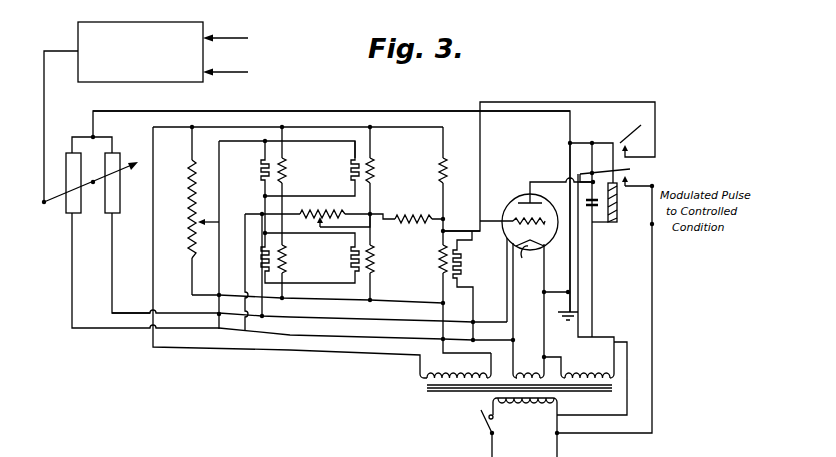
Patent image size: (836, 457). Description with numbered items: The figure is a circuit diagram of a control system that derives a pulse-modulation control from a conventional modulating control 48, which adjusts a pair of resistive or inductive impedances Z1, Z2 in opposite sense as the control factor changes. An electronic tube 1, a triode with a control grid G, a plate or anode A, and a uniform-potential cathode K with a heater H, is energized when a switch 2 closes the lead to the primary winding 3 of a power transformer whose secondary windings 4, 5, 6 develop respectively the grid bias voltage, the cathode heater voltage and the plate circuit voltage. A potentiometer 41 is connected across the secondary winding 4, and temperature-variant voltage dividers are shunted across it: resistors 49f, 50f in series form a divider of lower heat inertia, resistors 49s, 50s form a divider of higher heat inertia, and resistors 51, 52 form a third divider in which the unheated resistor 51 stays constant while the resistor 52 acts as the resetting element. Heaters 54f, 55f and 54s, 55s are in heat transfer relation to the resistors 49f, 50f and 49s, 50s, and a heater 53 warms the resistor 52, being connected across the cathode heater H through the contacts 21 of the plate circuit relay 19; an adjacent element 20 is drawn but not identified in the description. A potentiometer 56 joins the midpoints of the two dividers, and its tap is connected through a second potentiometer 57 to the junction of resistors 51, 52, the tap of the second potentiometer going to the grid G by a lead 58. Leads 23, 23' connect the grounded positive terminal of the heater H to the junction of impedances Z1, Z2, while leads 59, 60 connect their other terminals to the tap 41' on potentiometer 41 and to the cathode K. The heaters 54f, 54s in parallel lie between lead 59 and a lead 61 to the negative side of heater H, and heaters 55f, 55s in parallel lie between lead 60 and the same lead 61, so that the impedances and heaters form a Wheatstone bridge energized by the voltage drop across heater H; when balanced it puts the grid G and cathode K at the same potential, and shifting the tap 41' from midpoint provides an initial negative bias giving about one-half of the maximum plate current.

The conventional modulating control 48 is at (187, 21).
The lead 23' is at (331, 101).
The control impedance Z1 is at (65, 207).
The control impedance Z2 is at (117, 208).
The potentiometer 41 is at (179, 209).
The tap 41' is at (207, 235).
The heater 54f is at (262, 175).
The resistor 49f is at (286, 172).
The heater 54s is at (352, 175).
The resistor 49s is at (376, 172).
The resistor 51 is at (449, 172).
The potentiometer 56 is at (322, 208).
The second potentiometer 57 is at (413, 212).
The lead 58 is at (449, 230).
The heater 55f is at (262, 260).
The resistor 50f is at (286, 260).
The heater 55s is at (344, 259).
The resistor 50s is at (376, 260).
The resistor 52 is at (439, 268).
The heater 53 is at (463, 273).
The lead 59 is at (96, 327).
The lead 60 is at (283, 305).
The lead 61 is at (290, 252).
The secondary winding 4 is at (425, 380).
The secondary winding 5 is at (529, 360).
The secondary winding 6 is at (588, 359).
The primary winding 3 is at (556, 405).
The switch 2 is at (483, 422).
The electronic tube 1 is at (520, 197).
The plate or anode A is at (542, 203).
The control grid G is at (519, 221).
The cathode K is at (546, 241).
The heater H is at (526, 252).
The contacts 21 is at (630, 132).
The switch 20 is at (630, 173).
The plate circuit relay 19 is at (617, 216).
The lead 23 is at (594, 227).